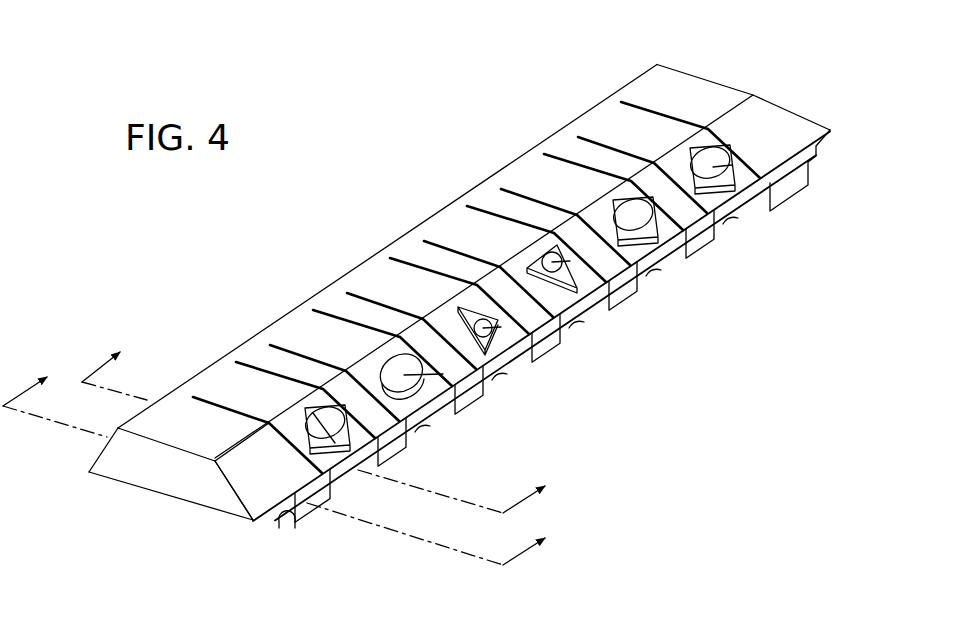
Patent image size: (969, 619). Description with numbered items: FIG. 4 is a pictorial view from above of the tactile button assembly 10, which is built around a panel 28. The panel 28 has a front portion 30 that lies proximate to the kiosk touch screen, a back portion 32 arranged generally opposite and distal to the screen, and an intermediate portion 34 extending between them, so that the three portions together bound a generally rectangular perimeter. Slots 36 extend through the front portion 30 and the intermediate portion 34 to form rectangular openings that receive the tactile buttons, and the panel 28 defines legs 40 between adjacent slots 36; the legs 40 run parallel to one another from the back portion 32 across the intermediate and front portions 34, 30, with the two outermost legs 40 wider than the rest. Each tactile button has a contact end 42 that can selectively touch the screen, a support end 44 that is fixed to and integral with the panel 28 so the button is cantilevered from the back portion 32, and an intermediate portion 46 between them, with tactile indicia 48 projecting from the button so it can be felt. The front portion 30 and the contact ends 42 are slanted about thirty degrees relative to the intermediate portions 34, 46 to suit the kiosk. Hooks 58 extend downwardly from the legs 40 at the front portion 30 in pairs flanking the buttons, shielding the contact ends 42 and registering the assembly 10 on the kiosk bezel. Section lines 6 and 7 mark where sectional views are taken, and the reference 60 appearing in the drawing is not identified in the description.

The tactile button assembly 10 is at (768, 78).
The panel 28 is at (700, 76).
The front portion 30 is at (235, 497).
The back portion 32 is at (122, 452).
The intermediate portion 34 is at (170, 470).
The slots 36 is at (197, 397).
The legs 40 is at (450, 236).
The contact end 42 is at (541, 366).
The support end 44 is at (405, 211).
The intermediate portion 46 is at (481, 219).
The tactile indicia 48 is at (567, 314).
The hook 58 is at (557, 388).
The mounting surface 60 is at (655, 613).
The section line 6- 6 is at (283, 461).
The section line 7- 7 is at (322, 419).